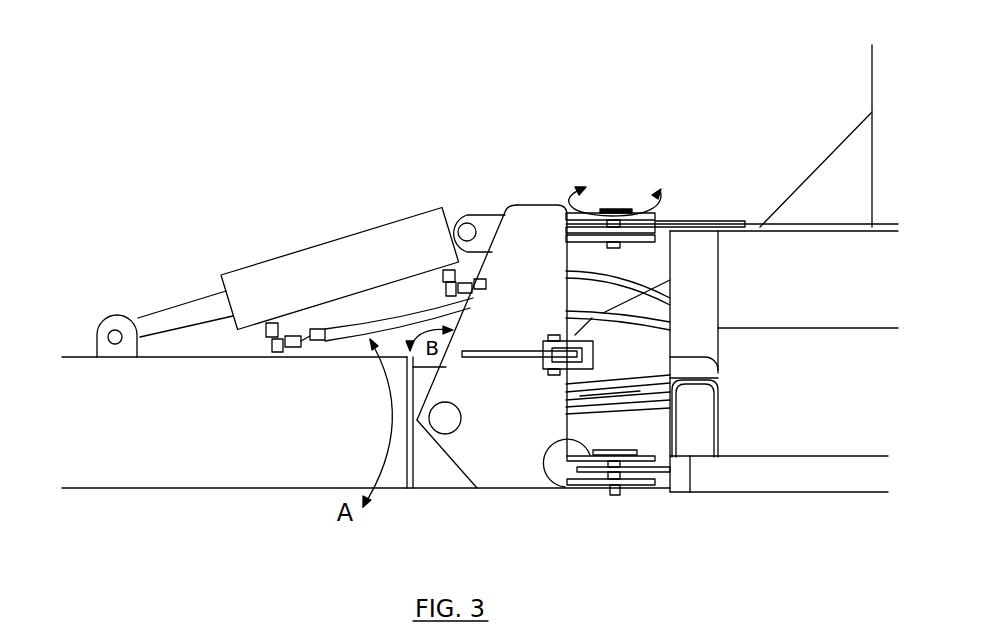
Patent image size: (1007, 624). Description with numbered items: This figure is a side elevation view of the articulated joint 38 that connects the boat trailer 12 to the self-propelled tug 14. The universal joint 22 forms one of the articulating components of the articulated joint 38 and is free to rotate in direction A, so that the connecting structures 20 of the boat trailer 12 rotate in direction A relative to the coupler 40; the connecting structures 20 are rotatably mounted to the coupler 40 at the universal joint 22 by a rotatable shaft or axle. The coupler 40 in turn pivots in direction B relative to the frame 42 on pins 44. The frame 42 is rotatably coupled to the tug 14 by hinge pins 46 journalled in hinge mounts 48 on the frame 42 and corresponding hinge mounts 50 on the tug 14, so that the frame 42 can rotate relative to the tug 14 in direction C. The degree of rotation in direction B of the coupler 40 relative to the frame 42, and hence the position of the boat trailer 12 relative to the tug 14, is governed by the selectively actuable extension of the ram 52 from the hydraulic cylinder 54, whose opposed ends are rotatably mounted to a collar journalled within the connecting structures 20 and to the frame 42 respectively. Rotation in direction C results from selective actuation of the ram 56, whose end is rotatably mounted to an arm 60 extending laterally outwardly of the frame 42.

The boat trailer 12 is at (85, 491).
The self-propelled tug 14 is at (838, 143).
The connecting structures 20 is at (217, 431).
The universal joint 22 is at (415, 492).
The articulated joint 38 is at (594, 62).
The coupler 40 is at (440, 488).
The frame 42 is at (508, 296).
The pins 44 is at (462, 433).
The hinge pins 46 is at (615, 210).
The hinge mounts 48 is at (567, 243).
The hinge mounts 50 is at (690, 221).
The ram 52 is at (185, 298).
The hydraulic cylinder 54 is at (343, 240).
The ram 56 is at (718, 373).
The arm 60 is at (468, 350).